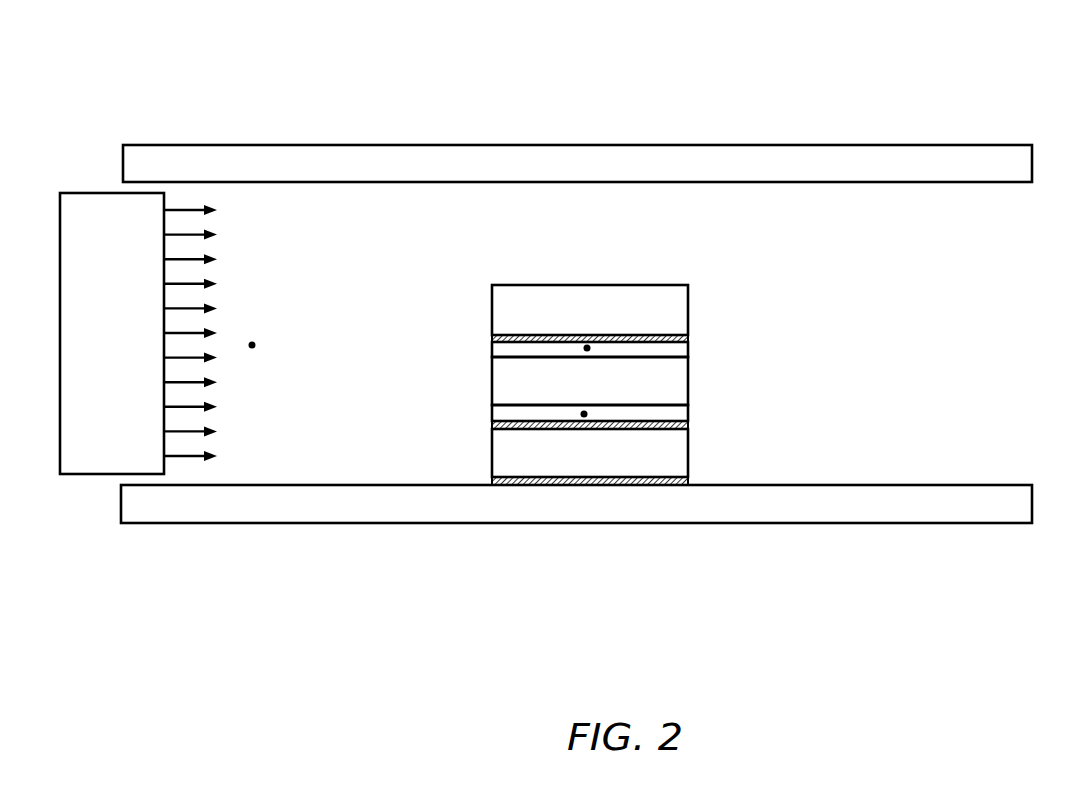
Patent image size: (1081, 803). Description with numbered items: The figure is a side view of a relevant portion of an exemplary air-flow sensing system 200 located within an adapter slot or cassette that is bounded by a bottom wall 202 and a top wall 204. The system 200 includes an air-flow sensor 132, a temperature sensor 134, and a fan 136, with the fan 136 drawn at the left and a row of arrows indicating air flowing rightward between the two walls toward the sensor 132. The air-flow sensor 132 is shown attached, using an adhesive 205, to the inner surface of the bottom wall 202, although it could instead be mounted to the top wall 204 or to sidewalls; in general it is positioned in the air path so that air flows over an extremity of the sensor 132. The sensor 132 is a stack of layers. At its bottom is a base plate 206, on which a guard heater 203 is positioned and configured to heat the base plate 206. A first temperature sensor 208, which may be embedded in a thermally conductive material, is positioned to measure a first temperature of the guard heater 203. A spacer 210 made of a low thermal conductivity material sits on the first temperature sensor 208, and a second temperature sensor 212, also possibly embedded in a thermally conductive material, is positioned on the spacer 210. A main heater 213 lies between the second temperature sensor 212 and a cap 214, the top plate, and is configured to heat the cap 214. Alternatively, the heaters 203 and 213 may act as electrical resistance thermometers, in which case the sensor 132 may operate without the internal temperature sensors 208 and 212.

The air-flow sensing system 200 is at (1040, 82).
The bottom wall 202 is at (604, 517).
The guard heater 203 is at (492, 424).
The top wall 204 is at (645, 176).
The adhesive 205 is at (632, 468).
The base plate 206 is at (604, 464).
The first temperature sensor 208 is at (584, 414).
The spacer 210 is at (607, 396).
The second temperature sensor 212 is at (587, 348).
The main heater 213 is at (492, 338).
The cap 214 is at (608, 324).
The air-flow sensor 132 is at (675, 384).
The temperature sensor 134 is at (252, 345).
The fan 136 is at (132, 366).